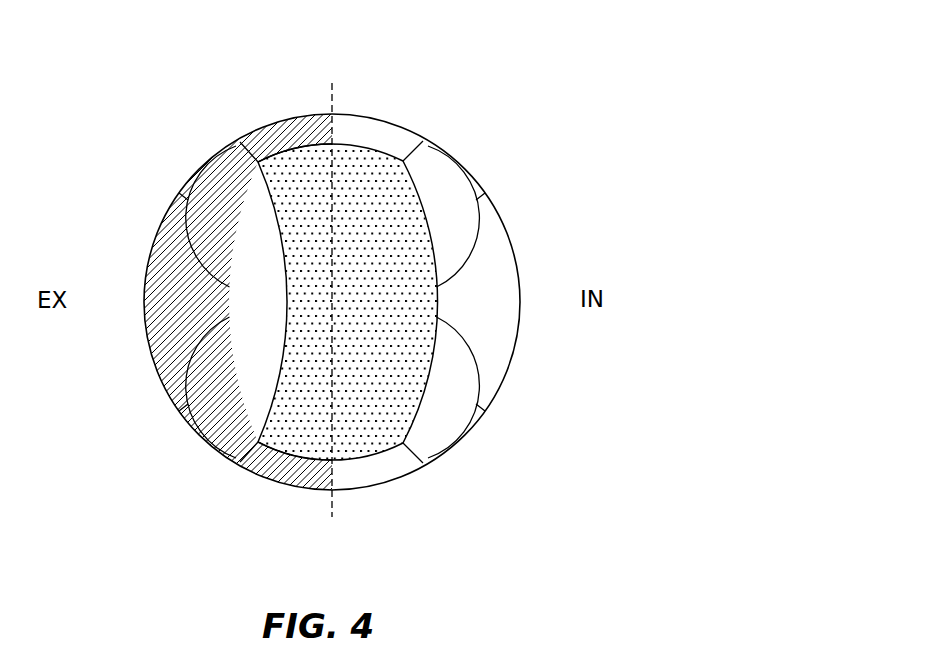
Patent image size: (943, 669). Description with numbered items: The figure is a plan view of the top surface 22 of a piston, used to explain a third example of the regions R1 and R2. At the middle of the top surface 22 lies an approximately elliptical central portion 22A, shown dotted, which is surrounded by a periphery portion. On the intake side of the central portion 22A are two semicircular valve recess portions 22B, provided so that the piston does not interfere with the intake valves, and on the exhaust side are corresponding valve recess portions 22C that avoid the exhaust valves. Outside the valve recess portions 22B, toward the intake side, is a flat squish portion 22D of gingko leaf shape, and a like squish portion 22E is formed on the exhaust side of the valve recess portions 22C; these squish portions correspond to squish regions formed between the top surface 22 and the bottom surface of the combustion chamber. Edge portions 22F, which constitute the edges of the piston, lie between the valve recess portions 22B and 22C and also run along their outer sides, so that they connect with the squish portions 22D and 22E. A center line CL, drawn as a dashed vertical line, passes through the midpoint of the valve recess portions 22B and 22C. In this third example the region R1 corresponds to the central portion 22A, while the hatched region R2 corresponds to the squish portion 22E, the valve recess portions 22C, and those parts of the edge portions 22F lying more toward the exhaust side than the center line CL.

The top surface 22 is at (523, 365).
The central portion 22A is at (365, 444).
The valve recess portions 22B is at (438, 187).
The valve recess portions 22C is at (223, 182).
The squish portion 22D is at (493, 257).
The squish portion 22E is at (175, 258).
The edge portions 22F is at (310, 132).
The region R1 is at (362, 175).
The region R2 is at (152, 332).
The center line CL is at (335, 106).